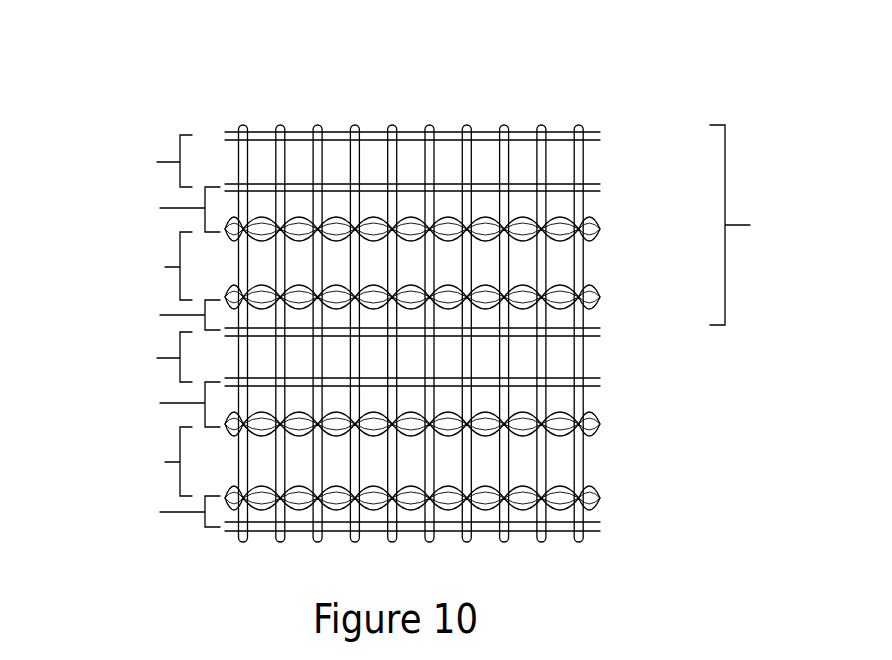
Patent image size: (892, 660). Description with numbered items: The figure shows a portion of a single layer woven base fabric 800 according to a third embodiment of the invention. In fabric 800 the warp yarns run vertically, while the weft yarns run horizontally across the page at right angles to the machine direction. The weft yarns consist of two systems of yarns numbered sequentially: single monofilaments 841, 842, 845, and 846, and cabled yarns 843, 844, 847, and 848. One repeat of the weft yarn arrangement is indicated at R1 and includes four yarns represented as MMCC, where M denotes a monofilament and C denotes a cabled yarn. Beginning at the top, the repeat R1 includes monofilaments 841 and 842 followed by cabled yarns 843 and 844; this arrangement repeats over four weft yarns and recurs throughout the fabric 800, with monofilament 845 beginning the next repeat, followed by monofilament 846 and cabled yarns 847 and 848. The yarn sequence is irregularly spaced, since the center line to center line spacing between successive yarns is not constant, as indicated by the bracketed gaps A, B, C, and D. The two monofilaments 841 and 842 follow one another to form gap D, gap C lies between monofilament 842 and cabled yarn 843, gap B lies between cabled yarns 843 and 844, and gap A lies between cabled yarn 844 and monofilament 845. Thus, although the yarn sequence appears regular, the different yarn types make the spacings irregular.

The single layer woven base fabric 800 is at (156, 85).
The monofilament weft yarn 841 is at (600, 138).
The monofilament weft yarn 842 is at (600, 189).
The cabled weft yarn 843 is at (600, 233).
The cabled weft yarn 844 is at (600, 303).
The monofilament weft yarn 845 is at (600, 333).
The monofilament weft yarn 846 is at (600, 383).
The cabled weft yarn 847 is at (600, 428).
The cabled weft yarn 848 is at (600, 502).
The weft yarn repeat R1 is at (757, 225).